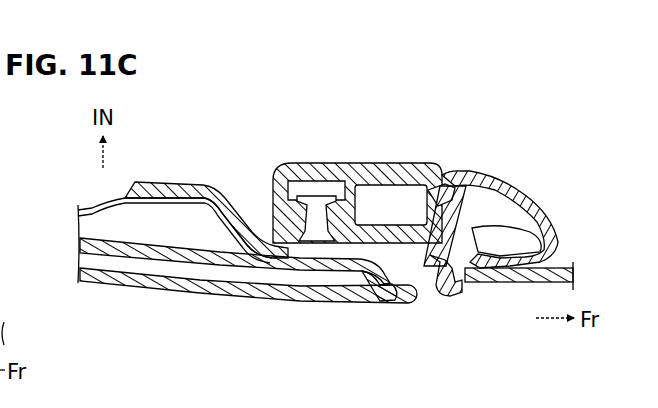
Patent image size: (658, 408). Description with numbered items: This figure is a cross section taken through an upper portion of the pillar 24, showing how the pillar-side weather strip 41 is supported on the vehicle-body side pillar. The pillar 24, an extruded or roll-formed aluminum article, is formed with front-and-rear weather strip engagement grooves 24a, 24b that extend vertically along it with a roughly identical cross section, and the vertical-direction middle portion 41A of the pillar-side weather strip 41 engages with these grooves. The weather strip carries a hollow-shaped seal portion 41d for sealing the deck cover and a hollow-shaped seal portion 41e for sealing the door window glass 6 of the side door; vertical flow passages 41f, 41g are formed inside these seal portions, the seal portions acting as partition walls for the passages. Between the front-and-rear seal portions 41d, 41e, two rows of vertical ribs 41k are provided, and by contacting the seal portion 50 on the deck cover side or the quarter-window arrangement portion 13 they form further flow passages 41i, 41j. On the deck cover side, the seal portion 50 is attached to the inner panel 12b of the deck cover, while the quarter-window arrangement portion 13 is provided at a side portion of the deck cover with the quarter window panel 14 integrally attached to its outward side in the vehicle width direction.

The door window glass 6 is at (497, 273).
The inner panel 12b is at (131, 201).
The quarter-window arrangement portion 13 is at (111, 254).
The quarter window panel 14 is at (142, 283).
The pillar 24 is at (371, 233).
The weather strip engagement groove 24a is at (434, 193).
The weather strip engagement groove 24b is at (327, 188).
The pillar-side weather strip 41 is at (492, 233).
The vertical-direction middle portion 41A is at (537, 197).
The hollow-shaped seal portion 41d is at (303, 234).
The hollow-shaped seal portion 41e is at (442, 291).
The vertical flow passage 41f is at (320, 234).
The vertical flow passage 41g is at (478, 240).
The flow passage 41i is at (360, 238).
The flow passage 41j is at (421, 175).
The vertical rib 41k is at (385, 266).
The seal portion 50 is at (170, 182).